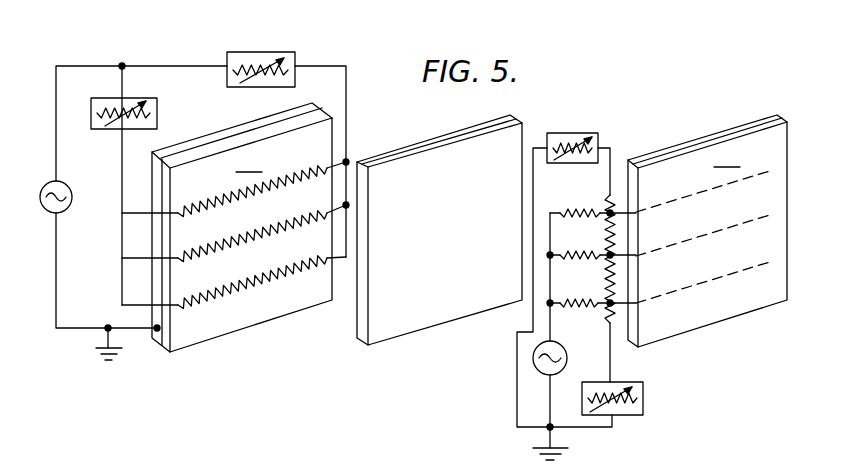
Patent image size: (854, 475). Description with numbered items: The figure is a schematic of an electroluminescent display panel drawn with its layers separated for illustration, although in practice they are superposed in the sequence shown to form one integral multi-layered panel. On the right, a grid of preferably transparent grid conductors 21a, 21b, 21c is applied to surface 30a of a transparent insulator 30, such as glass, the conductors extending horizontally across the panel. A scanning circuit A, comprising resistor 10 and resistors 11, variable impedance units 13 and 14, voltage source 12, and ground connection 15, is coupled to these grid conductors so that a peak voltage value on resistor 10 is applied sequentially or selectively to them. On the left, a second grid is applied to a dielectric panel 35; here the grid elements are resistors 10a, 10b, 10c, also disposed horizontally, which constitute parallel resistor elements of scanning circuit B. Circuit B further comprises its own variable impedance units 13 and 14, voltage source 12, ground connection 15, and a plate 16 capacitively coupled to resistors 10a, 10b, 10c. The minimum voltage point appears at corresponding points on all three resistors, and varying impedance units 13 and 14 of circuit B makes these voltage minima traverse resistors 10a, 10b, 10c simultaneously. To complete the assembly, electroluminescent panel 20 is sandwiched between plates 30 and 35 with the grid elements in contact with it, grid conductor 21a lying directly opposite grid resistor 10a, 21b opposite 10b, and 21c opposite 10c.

The resistor 10 is at (604, 277).
The grid resistor 10a is at (209, 203).
The grid resistor 10b is at (240, 237).
The grid resistor 10c is at (244, 312).
The resistors 11 is at (573, 209).
The voltage source 12 is at (46, 183).
The variable impedance unit 13 is at (158, 111).
The variable impedance unit 14 is at (250, 56).
The ground connection 15 is at (107, 326).
The plate 16 is at (156, 340).
The electroluminescent panel 20 is at (409, 170).
The grid conductor 21a is at (684, 196).
The grid conductor 21b is at (686, 239).
The grid conductor 21c is at (703, 285).
The transparent insulator 30 is at (707, 231).
The surface 30a is at (690, 142).
The dielectric panel 35 is at (249, 162).
The scanning circuit A is at (533, 382).
The scanning circuit B is at (74, 240).